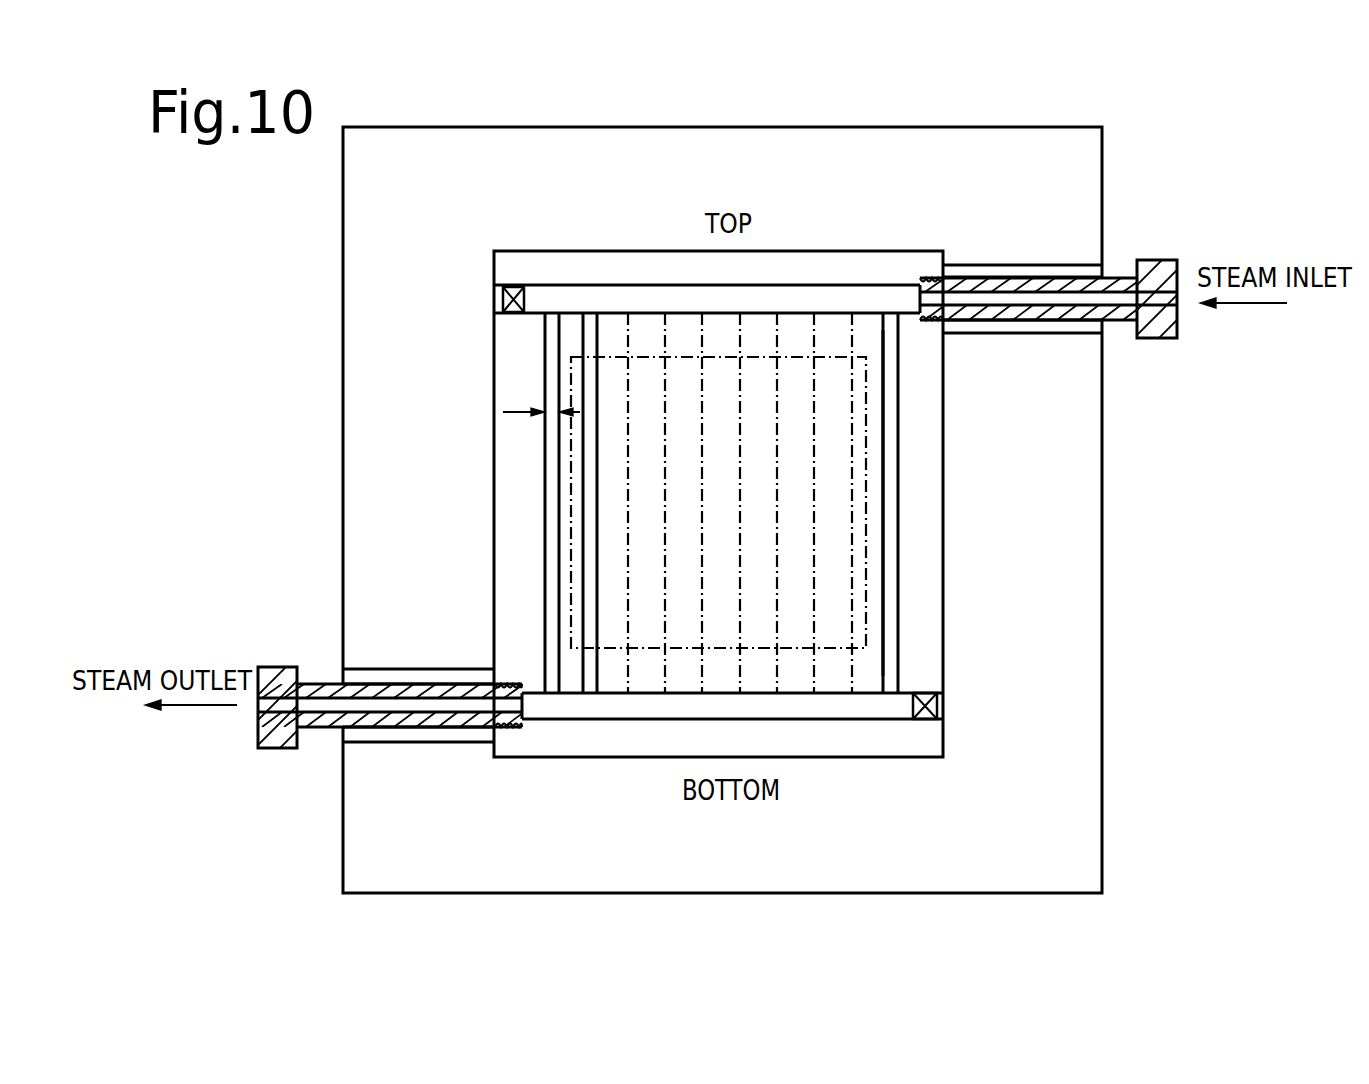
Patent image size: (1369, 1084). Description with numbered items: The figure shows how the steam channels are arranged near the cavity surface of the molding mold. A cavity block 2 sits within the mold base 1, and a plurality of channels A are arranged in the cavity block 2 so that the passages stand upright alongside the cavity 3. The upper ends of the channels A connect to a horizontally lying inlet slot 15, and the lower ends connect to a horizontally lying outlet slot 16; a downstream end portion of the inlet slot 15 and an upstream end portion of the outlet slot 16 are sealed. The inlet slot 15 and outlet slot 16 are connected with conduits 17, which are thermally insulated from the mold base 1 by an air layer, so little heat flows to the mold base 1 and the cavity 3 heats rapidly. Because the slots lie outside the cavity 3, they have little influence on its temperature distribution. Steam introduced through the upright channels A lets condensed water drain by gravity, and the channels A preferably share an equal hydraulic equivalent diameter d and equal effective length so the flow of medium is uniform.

The mold base 1 is at (1077, 217).
The cavity block 2 is at (933, 443).
The cavity 3 is at (860, 428).
The channels A is at (890, 538).
The inlet slot 15 is at (912, 295).
The outlet slot 16 is at (900, 705).
The conduits 17 is at (1165, 258).
The hydraulic equivalent diameter d is at (541, 397).